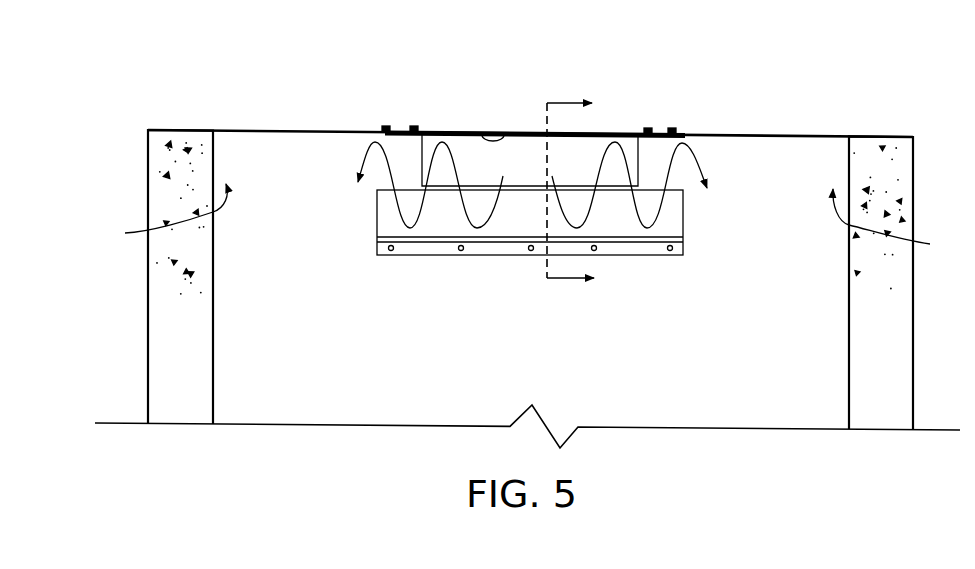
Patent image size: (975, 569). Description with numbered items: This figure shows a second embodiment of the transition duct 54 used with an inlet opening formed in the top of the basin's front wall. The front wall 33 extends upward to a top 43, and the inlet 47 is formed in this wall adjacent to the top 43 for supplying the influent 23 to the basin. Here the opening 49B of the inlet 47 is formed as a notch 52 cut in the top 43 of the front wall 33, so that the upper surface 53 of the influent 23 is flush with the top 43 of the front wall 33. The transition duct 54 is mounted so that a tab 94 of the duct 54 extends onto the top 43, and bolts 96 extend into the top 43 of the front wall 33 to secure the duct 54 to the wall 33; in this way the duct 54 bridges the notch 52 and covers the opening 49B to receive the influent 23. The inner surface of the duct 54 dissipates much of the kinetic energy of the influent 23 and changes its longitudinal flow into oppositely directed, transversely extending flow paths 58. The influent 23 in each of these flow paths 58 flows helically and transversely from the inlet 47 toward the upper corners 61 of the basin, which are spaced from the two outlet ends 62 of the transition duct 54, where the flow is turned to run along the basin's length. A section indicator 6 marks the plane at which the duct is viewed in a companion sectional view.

The front wall 33 is at (235, 152).
The top 43 is at (770, 134).
The notch 52 is at (518, 146).
The tab 94 is at (410, 128).
The bolts 96 is at (674, 131).
The upper surface 53 is at (507, 132).
The opening 49B is at (617, 131).
The inlet 47 is at (648, 154).
The transversely extending flow paths 58 is at (375, 142).
The transition duct 54 is at (370, 234).
The outlet ends 62 is at (378, 204).
The influent 23 is at (564, 200).
The section line 6- 6 is at (579, 191).
The upper corners 61 is at (529, 221).